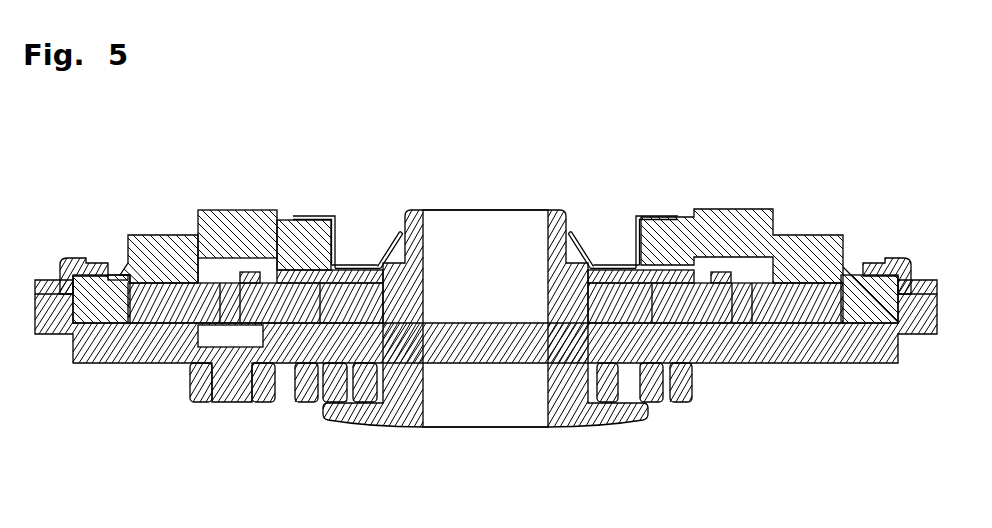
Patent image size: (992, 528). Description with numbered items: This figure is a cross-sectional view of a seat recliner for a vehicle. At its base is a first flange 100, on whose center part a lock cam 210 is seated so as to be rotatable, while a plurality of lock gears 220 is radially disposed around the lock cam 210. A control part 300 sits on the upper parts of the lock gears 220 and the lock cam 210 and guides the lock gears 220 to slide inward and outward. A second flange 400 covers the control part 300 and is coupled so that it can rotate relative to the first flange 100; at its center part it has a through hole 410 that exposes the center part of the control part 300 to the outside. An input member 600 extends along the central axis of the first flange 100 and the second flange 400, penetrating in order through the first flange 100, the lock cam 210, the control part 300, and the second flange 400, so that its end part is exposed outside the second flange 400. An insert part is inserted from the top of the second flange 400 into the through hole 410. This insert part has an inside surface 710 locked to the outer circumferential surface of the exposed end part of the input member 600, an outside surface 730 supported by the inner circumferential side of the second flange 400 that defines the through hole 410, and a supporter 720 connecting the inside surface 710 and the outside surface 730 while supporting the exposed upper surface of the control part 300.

The first flange 100 is at (850, 352).
The lock cam 210 is at (635, 303).
The lock gears 220 is at (272, 290).
The control part 300 is at (617, 275).
The second flange 400 is at (828, 236).
The through hole 410 is at (585, 226).
The input member 600 is at (568, 413).
The inside surface 710 is at (400, 232).
The supporter 720 is at (364, 266).
The outside surface 730 is at (336, 226).